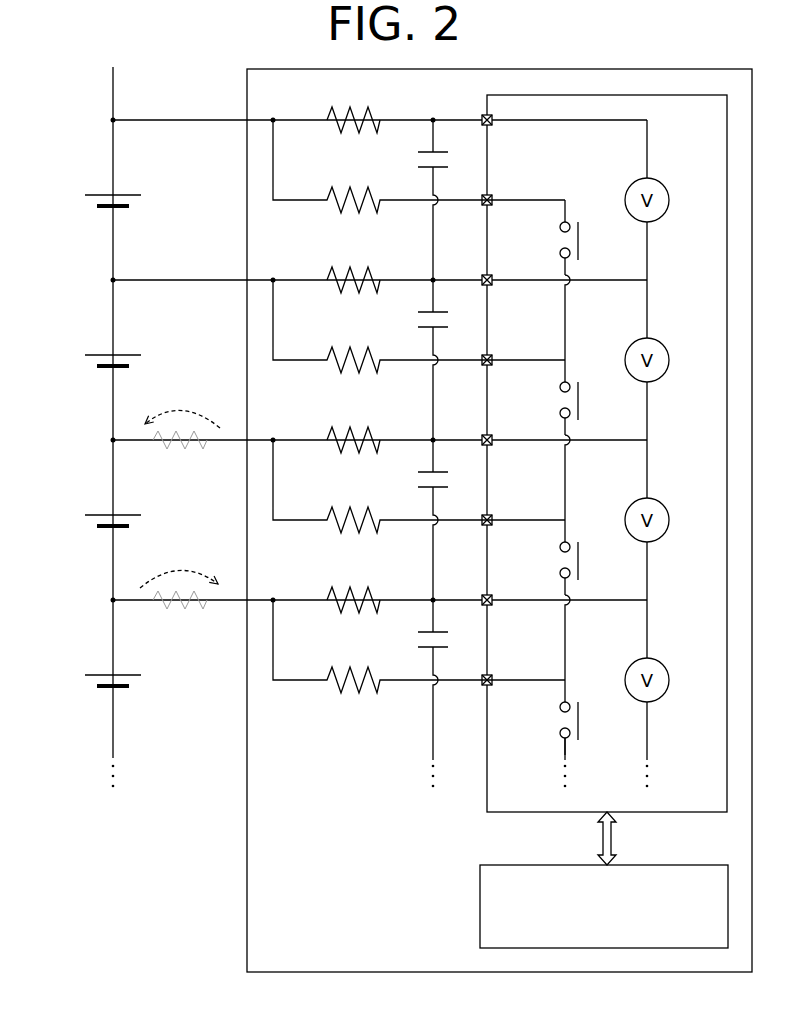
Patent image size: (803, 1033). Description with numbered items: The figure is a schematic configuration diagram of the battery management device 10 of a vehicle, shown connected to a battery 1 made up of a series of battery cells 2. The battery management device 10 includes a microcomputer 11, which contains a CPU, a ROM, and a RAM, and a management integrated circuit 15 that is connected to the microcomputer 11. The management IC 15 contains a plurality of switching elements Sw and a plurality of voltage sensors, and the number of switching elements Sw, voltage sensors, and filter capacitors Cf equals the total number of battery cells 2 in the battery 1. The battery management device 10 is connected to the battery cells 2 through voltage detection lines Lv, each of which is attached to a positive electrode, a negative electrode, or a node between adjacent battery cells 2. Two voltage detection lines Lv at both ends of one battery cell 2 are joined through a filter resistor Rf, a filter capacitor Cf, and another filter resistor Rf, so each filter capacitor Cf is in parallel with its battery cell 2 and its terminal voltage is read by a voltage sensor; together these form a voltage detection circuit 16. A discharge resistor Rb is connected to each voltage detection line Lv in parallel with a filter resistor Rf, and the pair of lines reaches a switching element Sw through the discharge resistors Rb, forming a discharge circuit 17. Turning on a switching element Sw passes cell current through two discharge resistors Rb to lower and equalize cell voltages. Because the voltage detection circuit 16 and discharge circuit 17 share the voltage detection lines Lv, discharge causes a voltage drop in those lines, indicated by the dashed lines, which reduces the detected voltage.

The battery 1 is at (100, 747).
The battery cell 2 is at (80, 200).
The battery management device 10 is at (242, 940).
The microcomputer 11 is at (480, 907).
The management integrated circuit 15 is at (487, 800).
The voltage detection circuit 16 is at (652, 160).
The discharge circuit 17 is at (510, 196).
The voltage detection line Lv is at (178, 122).
The filter resistor Rf is at (378, 118).
The discharge resistor Rb is at (328, 196).
The filter capacitor Cf is at (414, 159).
The switching element Sw is at (579, 215).